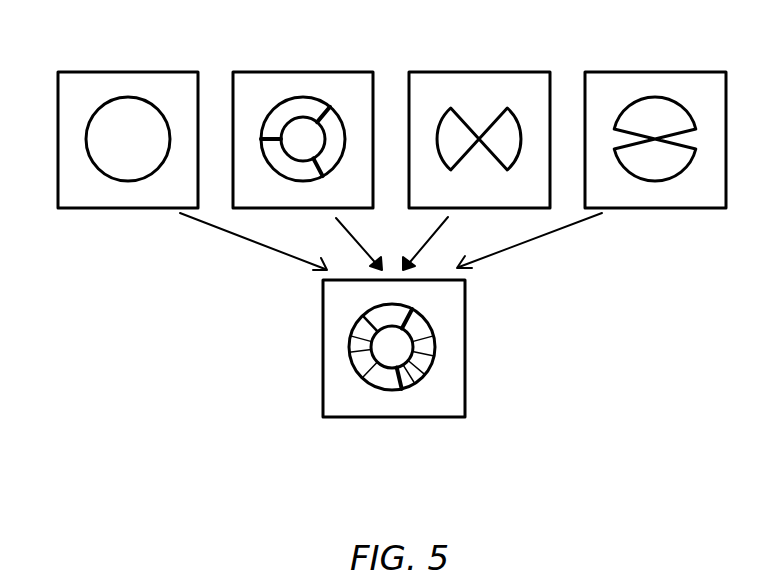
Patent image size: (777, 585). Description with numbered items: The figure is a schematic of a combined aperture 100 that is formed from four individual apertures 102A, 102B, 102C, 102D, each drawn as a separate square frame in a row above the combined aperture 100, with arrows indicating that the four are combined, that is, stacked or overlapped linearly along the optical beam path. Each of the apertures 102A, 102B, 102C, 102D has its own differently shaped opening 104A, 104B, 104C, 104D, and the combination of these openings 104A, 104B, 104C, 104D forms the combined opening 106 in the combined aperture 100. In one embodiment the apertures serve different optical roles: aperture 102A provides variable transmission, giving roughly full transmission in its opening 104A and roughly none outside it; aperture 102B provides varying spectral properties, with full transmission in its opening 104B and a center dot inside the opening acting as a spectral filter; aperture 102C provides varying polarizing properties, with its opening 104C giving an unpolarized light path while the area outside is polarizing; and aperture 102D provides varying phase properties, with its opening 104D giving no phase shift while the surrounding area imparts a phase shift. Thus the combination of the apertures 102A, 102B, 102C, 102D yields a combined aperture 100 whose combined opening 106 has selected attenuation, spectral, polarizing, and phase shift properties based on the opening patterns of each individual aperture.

The combined aperture 100 is at (407, 420).
The aperture 102A is at (126, 64).
The aperture 102B is at (316, 64).
The aperture 102C is at (493, 64).
The aperture 102D is at (670, 64).
The opening 104A is at (132, 165).
The opening 104B is at (290, 167).
The opening 104C is at (508, 147).
The opening 104D is at (652, 165).
The combined opening 106 is at (425, 345).